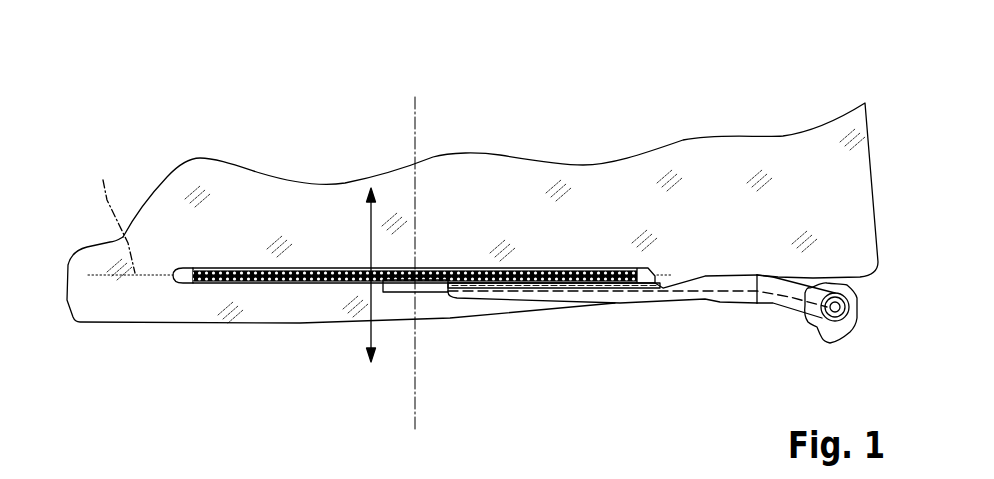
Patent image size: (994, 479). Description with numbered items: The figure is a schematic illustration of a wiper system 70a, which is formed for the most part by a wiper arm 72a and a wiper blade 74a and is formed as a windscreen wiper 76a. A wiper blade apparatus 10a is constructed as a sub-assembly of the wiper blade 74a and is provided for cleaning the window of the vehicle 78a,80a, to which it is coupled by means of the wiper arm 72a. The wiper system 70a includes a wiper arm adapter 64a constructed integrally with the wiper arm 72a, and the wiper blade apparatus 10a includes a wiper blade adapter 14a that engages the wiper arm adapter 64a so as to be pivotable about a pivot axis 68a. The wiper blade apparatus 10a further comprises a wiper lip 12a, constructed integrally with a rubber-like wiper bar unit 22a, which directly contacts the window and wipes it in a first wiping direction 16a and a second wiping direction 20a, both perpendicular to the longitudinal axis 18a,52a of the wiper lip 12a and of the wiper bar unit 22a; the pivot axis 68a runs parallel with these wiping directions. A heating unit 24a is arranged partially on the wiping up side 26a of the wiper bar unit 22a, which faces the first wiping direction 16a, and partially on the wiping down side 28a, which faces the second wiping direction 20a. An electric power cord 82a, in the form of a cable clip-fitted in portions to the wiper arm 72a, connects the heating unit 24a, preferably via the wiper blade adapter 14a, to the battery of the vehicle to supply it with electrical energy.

The wiper blade apparatus 10a is at (385, 115).
The wiper lip 12a is at (203, 283).
The wiper blade adapter 14a is at (400, 284).
The first wiping direction 16a is at (370, 228).
The longitudinal axis 18a,52a is at (107, 215).
The second wiping direction 20a is at (368, 314).
The wiper bar unit 22a is at (467, 267).
The heating unit 24a is at (268, 290).
The wiping up side 26a is at (603, 267).
The wiping down side 28a is at (219, 283).
The wiper arm adapter 64a is at (448, 316).
The pivot axis 68a is at (417, 137).
The wiper system 70a is at (168, 97).
The wiper arm 72a is at (718, 299).
The wiper blade 74a is at (229, 258).
The windscreen wiper 76a is at (232, 112).
The vehicle and window 78a,80a is at (783, 160).
The electric power cord 82a is at (790, 310).